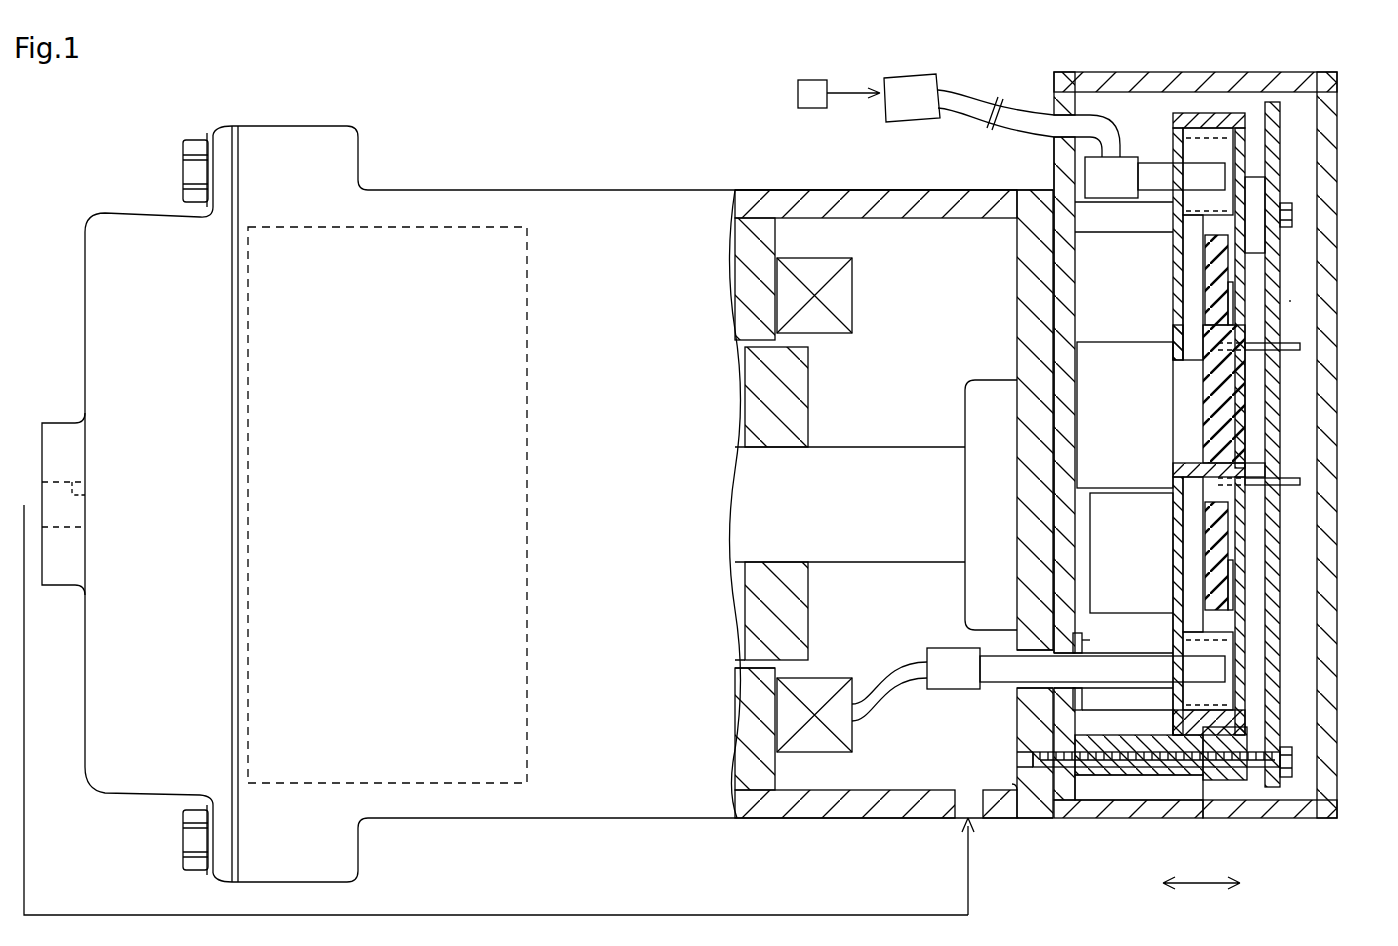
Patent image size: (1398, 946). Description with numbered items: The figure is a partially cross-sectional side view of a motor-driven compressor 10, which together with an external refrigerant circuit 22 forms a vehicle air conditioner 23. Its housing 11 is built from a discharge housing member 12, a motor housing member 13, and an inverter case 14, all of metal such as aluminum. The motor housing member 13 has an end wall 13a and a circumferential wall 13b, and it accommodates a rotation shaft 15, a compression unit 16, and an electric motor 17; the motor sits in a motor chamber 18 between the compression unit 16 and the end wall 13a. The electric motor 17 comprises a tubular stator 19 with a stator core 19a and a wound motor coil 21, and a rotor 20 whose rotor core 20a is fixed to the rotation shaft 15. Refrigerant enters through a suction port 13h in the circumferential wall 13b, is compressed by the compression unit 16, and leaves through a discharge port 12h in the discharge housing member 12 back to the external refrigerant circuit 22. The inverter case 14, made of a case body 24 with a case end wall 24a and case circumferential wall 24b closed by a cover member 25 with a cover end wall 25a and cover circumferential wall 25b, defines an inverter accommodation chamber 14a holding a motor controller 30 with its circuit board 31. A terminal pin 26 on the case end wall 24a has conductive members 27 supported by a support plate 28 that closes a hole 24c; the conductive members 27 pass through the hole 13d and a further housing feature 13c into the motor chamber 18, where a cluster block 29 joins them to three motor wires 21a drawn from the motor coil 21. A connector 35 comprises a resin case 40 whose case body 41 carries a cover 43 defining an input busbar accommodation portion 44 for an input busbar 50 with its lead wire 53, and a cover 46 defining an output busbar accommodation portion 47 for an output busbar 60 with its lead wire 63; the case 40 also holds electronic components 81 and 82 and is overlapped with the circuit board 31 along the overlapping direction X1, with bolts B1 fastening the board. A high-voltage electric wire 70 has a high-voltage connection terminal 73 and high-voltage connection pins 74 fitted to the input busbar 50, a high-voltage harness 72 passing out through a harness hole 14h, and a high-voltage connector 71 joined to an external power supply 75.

The motor-driven compressor 10 is at (124, 176).
The housing 11 is at (538, 190).
The discharge housing member 12 is at (85, 268).
The discharge port 12h is at (86, 490).
The motor housing member 13 is at (754, 190).
The end wall 13a is at (1017, 250).
The circumferential wall 13b is at (952, 190).
The bolt hole 13c is at (1025, 756).
The hole 13d is at (1014, 690).
The suction port 13h is at (957, 790).
The inverter case 14 is at (1250, 72).
The inverter accommodation chamber 14a is at (1300, 290).
The harness hole 14h is at (1050, 117).
The rotation shaft 15 is at (846, 562).
The compression unit 16 is at (433, 227).
The electric motor 17 is at (768, 214).
The motor chamber 18 is at (898, 646).
The stator 19 is at (652, 258).
The stator core 19a is at (760, 284).
The rotor 20 is at (745, 606).
The rotor core 20a is at (808, 400).
The motor coil 21 is at (778, 304).
The motor wires 21a is at (892, 708).
The external refrigerant circuit 22 is at (968, 880).
The vehicle air conditioner 23 is at (1008, 905).
The case body 24 is at (1157, 818).
The case end wall 24a is at (1062, 395).
The case circumferential wall 24b is at (1122, 818).
The hole 24c is at (1080, 690).
The cover member 25 is at (1252, 818).
The cover end wall 25a is at (1330, 428).
The cover circumferential wall 25b is at (1286, 818).
The terminal pin 26 is at (1098, 647).
The conductive member 27 is at (1152, 695).
The support plate 28 is at (1098, 630).
The cluster block 29 is at (942, 650).
The motor controller 30 is at (1292, 108).
The circuit board 31 is at (1275, 158).
The connector 35 is at (1176, 110).
The case 40 is at (1236, 400).
The case body 41 is at (1208, 410).
The cover 43 is at (1175, 326).
The input busbar accommodation portion 44 is at (1192, 280).
The cover 46 is at (1176, 526).
The output busbar accommodation portion 47 is at (1192, 560).
The input busbar 50 is at (1220, 128).
The lead wire 53 is at (1292, 345).
The output busbar 60 is at (1216, 790).
The lead wire 63 is at (1292, 484).
The high-voltage electric wire 70 is at (955, 82).
The high-voltage connector 71 is at (910, 110).
The high-voltage harness 72 is at (1012, 126).
The high-voltage connection terminal 73 is at (1110, 192).
The high-voltage connection pin 74 is at (1156, 176).
The external power supply 75 is at (798, 94).
The electronic component 81 is at (1100, 348).
The electronic component 82 is at (1112, 502).
The bolt B1 is at (1292, 216).
The overlapping direction X1 is at (1202, 883).